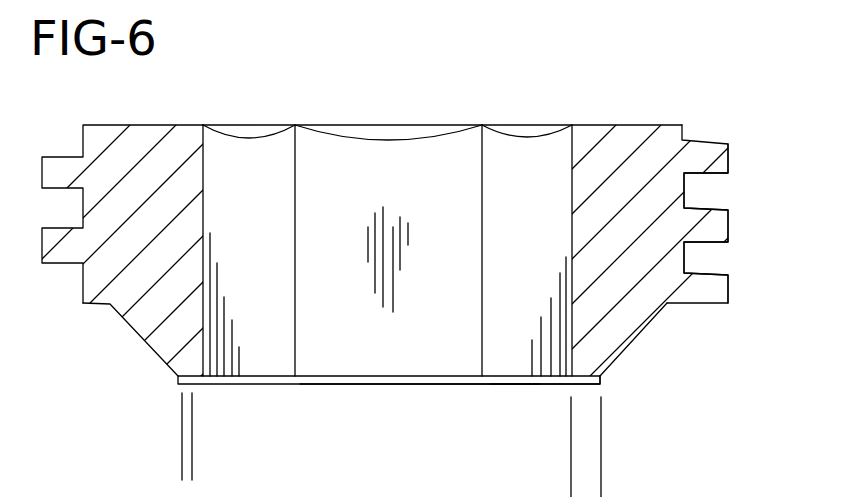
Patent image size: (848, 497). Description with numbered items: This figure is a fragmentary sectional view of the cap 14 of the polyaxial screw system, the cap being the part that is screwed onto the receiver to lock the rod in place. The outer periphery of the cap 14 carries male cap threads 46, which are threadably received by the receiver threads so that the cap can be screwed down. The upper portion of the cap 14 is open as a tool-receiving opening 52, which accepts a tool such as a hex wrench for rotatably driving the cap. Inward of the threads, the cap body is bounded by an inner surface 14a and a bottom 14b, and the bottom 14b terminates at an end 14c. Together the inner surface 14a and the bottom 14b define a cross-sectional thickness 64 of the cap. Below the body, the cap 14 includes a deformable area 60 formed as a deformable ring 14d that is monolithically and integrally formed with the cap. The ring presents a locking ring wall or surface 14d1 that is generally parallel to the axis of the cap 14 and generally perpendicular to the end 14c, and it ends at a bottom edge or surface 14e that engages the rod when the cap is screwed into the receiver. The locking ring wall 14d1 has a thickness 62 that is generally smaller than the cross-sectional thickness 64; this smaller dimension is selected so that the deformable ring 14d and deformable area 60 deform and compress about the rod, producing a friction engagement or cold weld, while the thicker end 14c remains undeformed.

The cap 14 is at (538, 122).
The inner surface 14a is at (593, 385).
The bottom 14b is at (636, 342).
The end 14c is at (258, 380).
The deformable ring 14d is at (177, 378).
The locking ring wall 14d1 is at (340, 383).
The bottom edge 14e is at (438, 385).
The male cap threads 46 is at (723, 165).
The tool-receiving opening 52 is at (350, 140).
The deformable area 60 is at (518, 392).
The thickness 62 is at (225, 465).
The cross-sectional thickness 64 is at (528, 487).